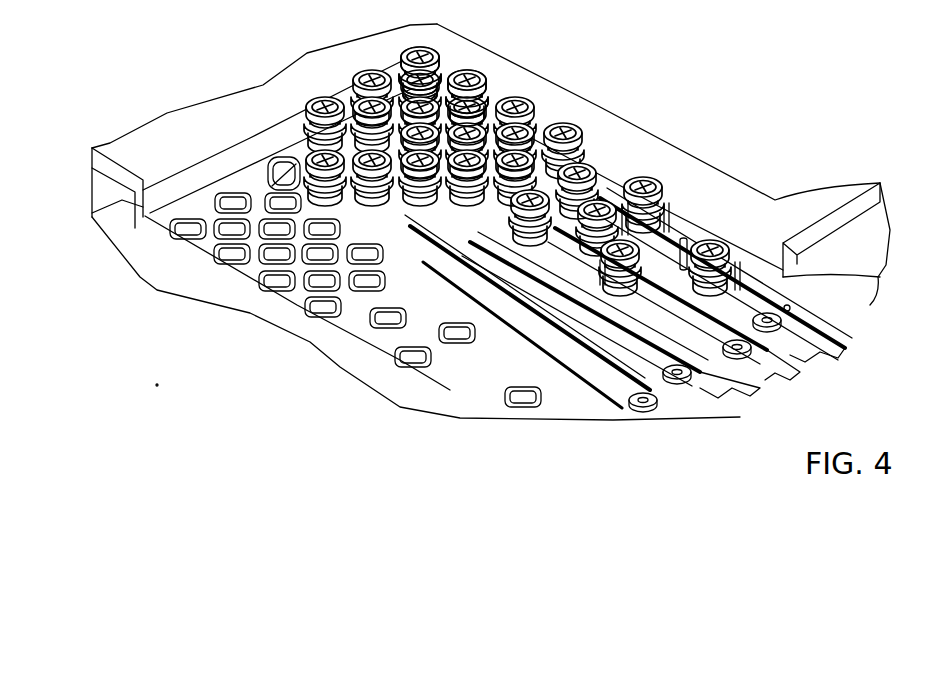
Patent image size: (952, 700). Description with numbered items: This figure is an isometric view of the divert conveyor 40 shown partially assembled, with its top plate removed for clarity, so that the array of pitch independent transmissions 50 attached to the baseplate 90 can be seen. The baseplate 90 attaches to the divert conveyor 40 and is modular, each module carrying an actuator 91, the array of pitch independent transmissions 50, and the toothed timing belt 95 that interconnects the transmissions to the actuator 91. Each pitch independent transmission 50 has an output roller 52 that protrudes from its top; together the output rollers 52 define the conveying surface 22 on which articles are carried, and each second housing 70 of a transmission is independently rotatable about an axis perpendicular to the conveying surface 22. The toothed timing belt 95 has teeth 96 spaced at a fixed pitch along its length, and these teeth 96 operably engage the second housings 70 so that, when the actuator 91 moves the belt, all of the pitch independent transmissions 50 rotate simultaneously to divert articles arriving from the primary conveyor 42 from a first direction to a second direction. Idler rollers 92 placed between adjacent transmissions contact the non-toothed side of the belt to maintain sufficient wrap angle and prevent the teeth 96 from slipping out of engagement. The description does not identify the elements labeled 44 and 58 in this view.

The divert conveyor 40 is at (128, 106).
The first side wall 44 is at (257, 103).
The primary conveyor 42 is at (723, 192).
The conveying surface 22 is at (500, 98).
The pitch independent transmission 50 is at (412, 45).
The output roller 52 is at (462, 70).
The second housing 70 is at (641, 175).
The support post 58 is at (676, 252).
The toothed timing belt 95 is at (787, 307).
The teeth 96 is at (790, 280).
The actuator 91 is at (775, 298).
The baseplate 90 is at (840, 347).
The idler rollers 92 is at (780, 372).